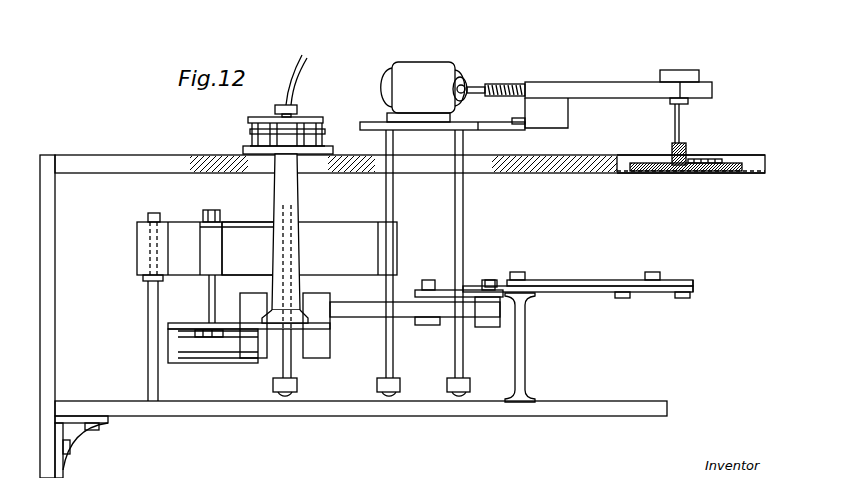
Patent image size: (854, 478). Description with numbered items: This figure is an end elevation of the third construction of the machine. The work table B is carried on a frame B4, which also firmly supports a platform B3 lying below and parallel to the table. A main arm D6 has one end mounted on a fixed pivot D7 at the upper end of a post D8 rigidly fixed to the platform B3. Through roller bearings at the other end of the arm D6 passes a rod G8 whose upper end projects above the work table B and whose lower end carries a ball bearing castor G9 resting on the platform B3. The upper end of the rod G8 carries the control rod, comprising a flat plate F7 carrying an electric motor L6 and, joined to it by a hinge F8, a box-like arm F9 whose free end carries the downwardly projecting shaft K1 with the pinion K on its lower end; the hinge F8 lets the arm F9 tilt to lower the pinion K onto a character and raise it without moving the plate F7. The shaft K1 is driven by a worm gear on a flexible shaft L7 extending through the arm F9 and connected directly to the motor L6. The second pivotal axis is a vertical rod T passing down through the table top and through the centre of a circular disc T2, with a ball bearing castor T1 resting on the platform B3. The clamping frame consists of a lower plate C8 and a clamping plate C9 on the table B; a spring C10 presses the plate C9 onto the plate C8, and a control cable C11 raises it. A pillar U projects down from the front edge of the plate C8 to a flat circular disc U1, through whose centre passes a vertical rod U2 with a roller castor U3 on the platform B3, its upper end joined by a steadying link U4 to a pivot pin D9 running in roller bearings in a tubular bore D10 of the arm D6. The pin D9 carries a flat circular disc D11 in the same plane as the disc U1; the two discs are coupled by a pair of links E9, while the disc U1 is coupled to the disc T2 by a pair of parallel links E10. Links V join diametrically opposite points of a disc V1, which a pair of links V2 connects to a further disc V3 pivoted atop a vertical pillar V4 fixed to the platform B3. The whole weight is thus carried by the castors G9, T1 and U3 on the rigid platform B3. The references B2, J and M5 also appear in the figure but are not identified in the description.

The work table B is at (97, 163).
The frame rail extension B2 is at (618, 172).
The platform B3 is at (455, 408).
The frame B4 is at (52, 325).
The lower plate C8 is at (250, 150).
The clamping plate C9 is at (254, 130).
The spring C10 is at (300, 113).
The control cable C11 is at (300, 62).
The main arm D6 is at (362, 230).
The fixed pivot D7 is at (153, 213).
The post D8 is at (148, 368).
The pivot pin D9 is at (209, 307).
The tubular bore D10 is at (215, 240).
The flat circular disc D11 is at (172, 324).
The pair of links E9 is at (215, 345).
The pair of parallel links E10 is at (400, 312).
The flat plate F7 is at (478, 128).
The hinge F8 is at (522, 128).
The box-like arm F9 is at (557, 92).
The rod G8 is at (394, 205).
The ball bearing castor G9 is at (400, 384).
The guide J is at (665, 173).
The pinion K is at (684, 150).
The downwardly projecting shaft K1 is at (674, 124).
The electric motor L6 is at (415, 75).
The flexible shaft L7 is at (512, 86).
The rack M5 is at (733, 163).
The vertical rod T is at (464, 219).
The ball bearing castor T1 is at (470, 385).
The circular disc T2 is at (421, 290).
The pillar U is at (293, 190).
The flat circular disc U1 is at (322, 326).
The vertical rod U2 is at (295, 368).
The roller castor U3 is at (290, 403).
The steadying link U4 is at (252, 222).
The links V is at (570, 292).
The disc V1 is at (682, 280).
The pair of links V2 is at (585, 280).
The disc V3 is at (503, 283).
The vertical pillar V4 is at (518, 336).